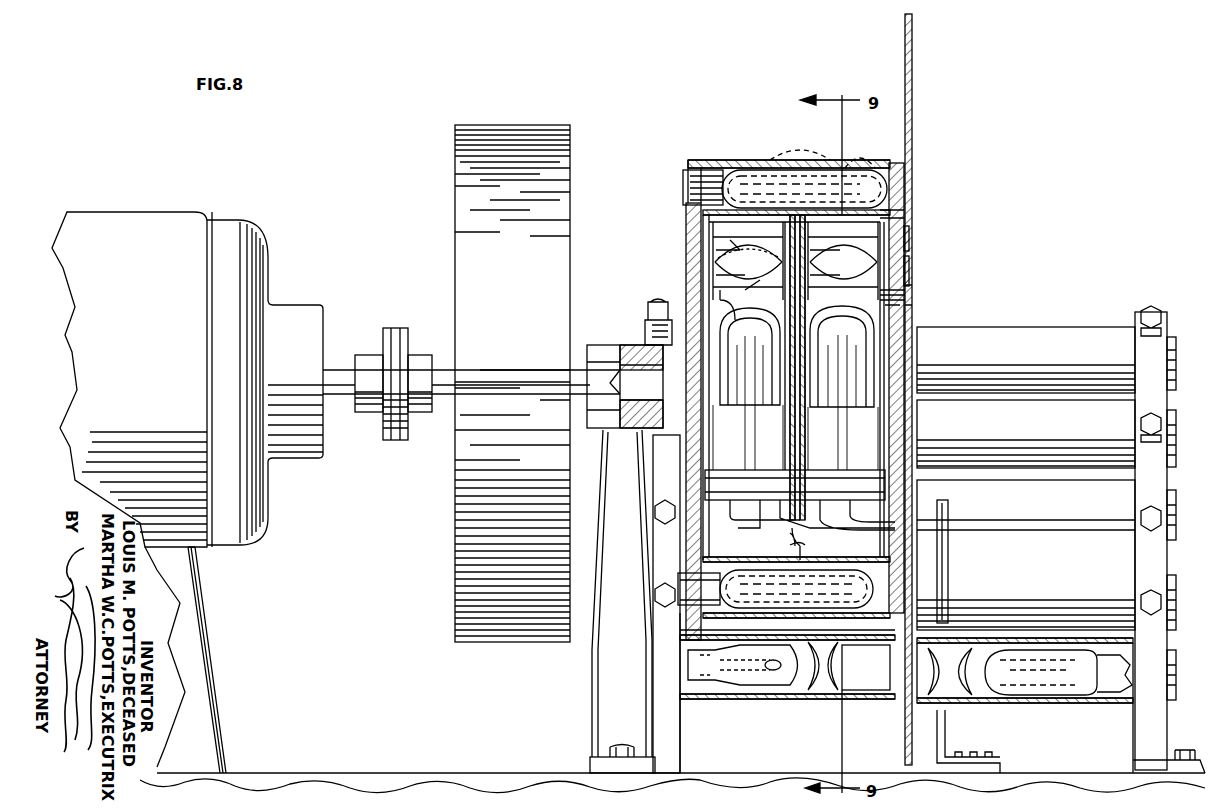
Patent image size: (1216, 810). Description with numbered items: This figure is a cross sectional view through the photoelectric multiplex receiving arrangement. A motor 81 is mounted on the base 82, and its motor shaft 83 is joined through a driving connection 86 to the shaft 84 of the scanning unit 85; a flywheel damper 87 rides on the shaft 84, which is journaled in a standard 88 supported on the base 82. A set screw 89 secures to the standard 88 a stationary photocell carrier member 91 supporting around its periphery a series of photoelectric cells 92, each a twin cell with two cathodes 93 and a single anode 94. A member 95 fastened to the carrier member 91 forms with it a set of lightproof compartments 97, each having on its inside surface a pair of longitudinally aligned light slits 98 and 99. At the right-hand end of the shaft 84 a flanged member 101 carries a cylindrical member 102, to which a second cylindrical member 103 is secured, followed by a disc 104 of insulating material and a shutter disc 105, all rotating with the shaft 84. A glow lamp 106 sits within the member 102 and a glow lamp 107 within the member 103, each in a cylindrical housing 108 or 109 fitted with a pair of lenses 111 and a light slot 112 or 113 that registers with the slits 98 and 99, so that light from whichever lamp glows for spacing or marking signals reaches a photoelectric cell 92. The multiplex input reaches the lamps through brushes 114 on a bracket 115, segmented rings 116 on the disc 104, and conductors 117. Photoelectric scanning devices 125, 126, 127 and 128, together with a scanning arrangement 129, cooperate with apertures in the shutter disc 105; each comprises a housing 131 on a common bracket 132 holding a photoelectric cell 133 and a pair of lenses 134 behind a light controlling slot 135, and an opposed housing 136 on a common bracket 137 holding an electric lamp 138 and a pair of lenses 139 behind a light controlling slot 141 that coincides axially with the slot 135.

The motor 81 is at (178, 214).
The base 82 is at (214, 740).
The motor shaft 83 is at (365, 398).
The shaft 84 is at (430, 398).
The scanning unit 85 is at (807, 393).
The driving connection 86 is at (382, 346).
The flywheel damper 87 is at (465, 181).
The standard 88 is at (602, 694).
The set screw 89 is at (646, 322).
The photocell carrier member 91 is at (688, 238).
The photoelectric cells 92 is at (782, 166).
The cathodes 93 is at (807, 160).
The anode 94 is at (862, 168).
The member 95 is at (703, 227).
The lightproof compartments 97 is at (900, 196).
The light slit 98 is at (690, 187).
The light slit 99 is at (897, 216).
The flanged member 101 is at (706, 375).
The cylindrical member 102 is at (720, 529).
The second cylindrical member 103 is at (792, 550).
The disc of insulating material 104 is at (906, 322).
The shutter disc 105 is at (913, 160).
The glow lamp 106 is at (752, 472).
The glow lamp 107 is at (854, 366).
The cylindrical housing 108 is at (732, 306).
The cylindrical housing 109 is at (826, 303).
The lenses 111 is at (743, 282).
The light slot 112 is at (762, 240).
The light slot 113 is at (856, 240).
The brushes 114 is at (942, 507).
The bracket 115 is at (950, 596).
The segmented rings 116 is at (911, 272).
The conductors 117 is at (777, 520).
The photoelectric scanning device 125 is at (1178, 434).
The photoelectric scanning device 126 is at (1178, 514).
The photoelectric scanning device 127 is at (1178, 354).
The photoelectric scanning device 128 is at (1178, 599).
The photoelectric scanning arrangement 129 is at (1178, 685).
The housing 131 is at (1068, 705).
The common bracket 132 is at (1140, 762).
The photoelectric cell 133 is at (1052, 655).
The lenses 134 is at (942, 700).
The light controlling slot 135 is at (927, 706).
The housing 136 is at (762, 702).
The common bracket 137 is at (684, 722).
The electric lamp 138 is at (774, 686).
The lenses 139 is at (840, 697).
The light controlling slot 141 is at (890, 672).